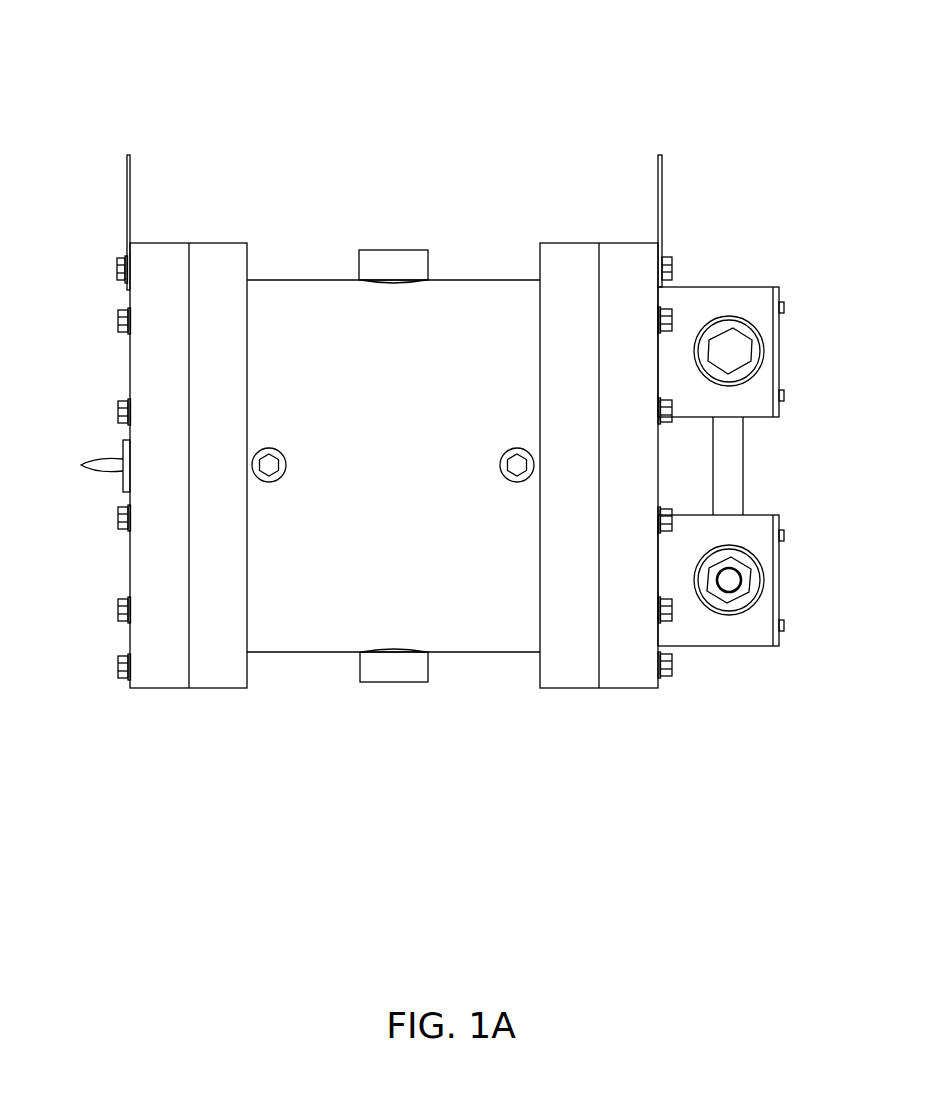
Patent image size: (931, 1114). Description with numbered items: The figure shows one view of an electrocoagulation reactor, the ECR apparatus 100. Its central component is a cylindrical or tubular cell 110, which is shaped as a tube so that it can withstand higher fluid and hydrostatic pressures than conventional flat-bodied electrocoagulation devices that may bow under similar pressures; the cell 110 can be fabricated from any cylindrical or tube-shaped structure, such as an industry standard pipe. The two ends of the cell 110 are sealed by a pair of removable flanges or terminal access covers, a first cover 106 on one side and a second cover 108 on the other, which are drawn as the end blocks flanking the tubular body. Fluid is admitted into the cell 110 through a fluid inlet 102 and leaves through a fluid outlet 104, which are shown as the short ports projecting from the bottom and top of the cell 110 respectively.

The ECR apparatus 100 is at (484, 67).
The fluid inlet 102 is at (402, 682).
The fluid outlet 104 is at (395, 250).
The first removable flange or terminal access cover 106 is at (698, 462).
The second removable flange or terminal access cover 108 is at (130, 360).
The cylindrical or tubular cell 110 is at (305, 640).